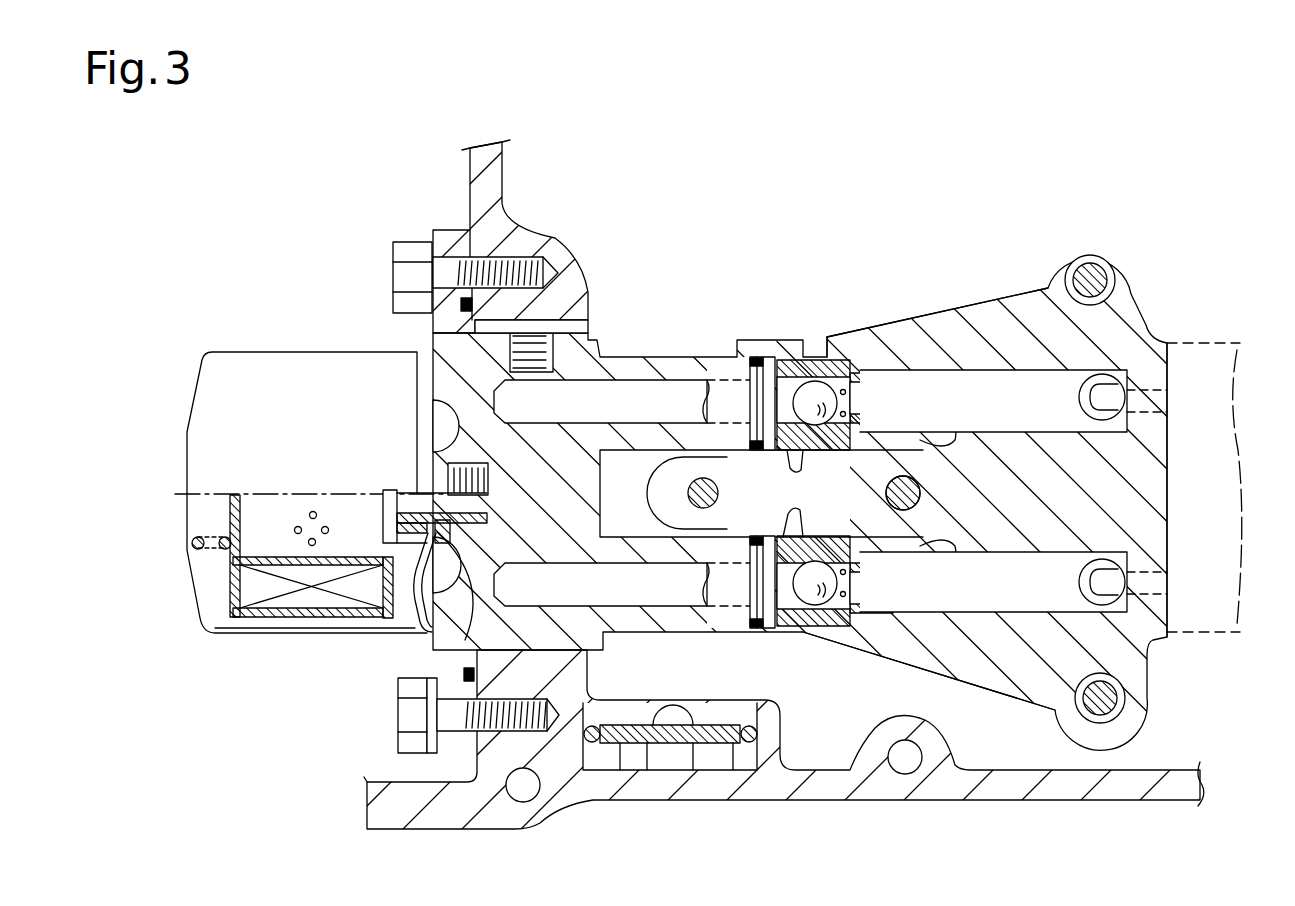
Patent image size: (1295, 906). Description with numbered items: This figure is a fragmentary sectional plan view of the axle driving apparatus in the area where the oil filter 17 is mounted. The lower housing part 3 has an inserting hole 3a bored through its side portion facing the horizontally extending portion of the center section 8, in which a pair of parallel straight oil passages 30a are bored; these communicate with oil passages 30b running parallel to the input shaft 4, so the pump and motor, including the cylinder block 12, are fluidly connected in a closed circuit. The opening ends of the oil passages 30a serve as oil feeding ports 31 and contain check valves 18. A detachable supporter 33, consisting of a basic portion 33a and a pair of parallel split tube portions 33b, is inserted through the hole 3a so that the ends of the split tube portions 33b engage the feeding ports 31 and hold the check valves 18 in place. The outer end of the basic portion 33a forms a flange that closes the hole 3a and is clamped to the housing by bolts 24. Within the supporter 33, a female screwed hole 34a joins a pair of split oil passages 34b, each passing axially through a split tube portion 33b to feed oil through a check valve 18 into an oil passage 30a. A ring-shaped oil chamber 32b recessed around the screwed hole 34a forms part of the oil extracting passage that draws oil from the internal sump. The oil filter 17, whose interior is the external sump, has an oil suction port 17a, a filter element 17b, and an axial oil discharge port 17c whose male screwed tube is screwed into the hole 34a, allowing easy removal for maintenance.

The lower housing part 3 is at (773, 787).
The inserting hole 3a is at (502, 335).
The input shaft 4 is at (920, 488).
The center section 8 is at (977, 300).
The cylinder block 12 is at (1226, 336).
The oil filter 17 is at (320, 455).
The oil suction port 17a is at (413, 556).
The filter element 17b is at (280, 607).
The oil discharge port 17c is at (422, 503).
The check valve 18 is at (843, 370).
The bolt 24 is at (410, 240).
The oil passage 30a is at (1022, 402).
The oil passage 30b is at (1103, 380).
The oil feeding port 31 is at (823, 306).
The oil chamber 32b is at (440, 425).
The supporter 33 is at (615, 340).
The basic portion 33a is at (628, 504).
The split tube portion 33b is at (735, 352).
The female screwed hole 34a is at (432, 640).
The split oil passage 34b is at (664, 427).